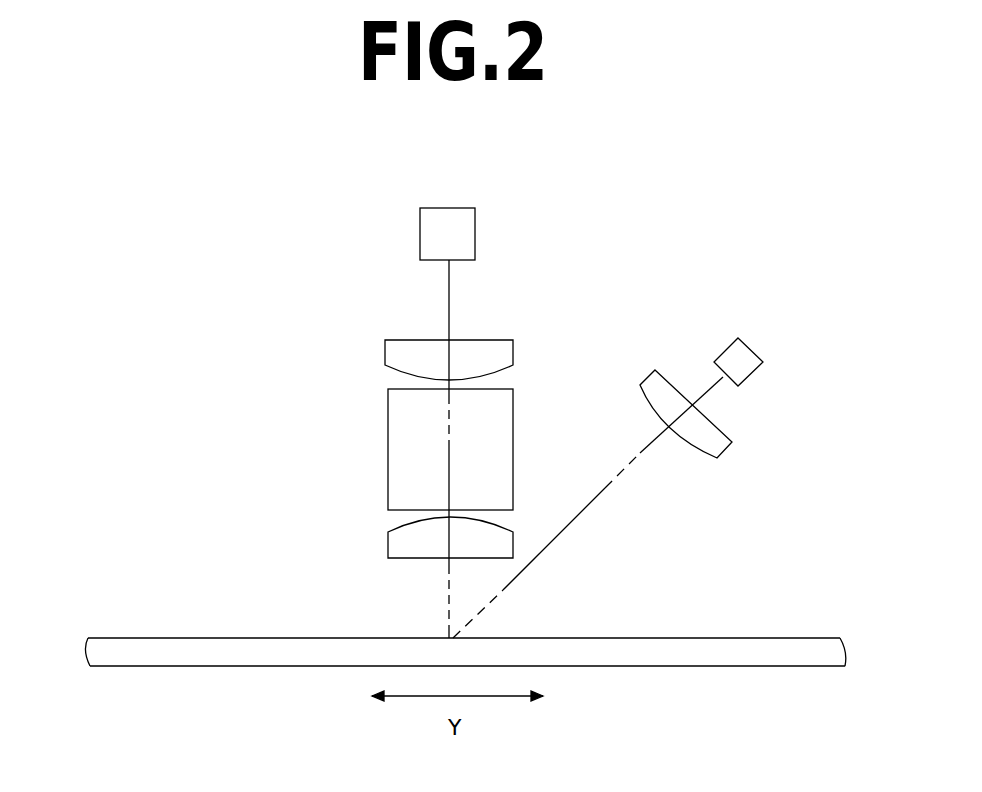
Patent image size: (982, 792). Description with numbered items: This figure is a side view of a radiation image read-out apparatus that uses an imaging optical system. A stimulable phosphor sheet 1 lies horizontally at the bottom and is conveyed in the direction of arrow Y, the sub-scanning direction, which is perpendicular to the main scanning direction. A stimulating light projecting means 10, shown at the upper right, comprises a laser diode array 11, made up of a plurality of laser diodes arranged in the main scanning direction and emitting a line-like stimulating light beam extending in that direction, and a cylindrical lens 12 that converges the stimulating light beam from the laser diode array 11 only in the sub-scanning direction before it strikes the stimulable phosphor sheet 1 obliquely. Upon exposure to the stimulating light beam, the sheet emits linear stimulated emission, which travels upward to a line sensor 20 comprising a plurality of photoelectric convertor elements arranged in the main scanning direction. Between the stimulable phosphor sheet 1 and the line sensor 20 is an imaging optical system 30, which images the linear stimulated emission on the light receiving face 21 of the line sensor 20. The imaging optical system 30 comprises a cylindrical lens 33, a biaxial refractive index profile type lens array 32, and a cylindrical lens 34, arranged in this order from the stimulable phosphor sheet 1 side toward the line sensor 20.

The stimulable phosphor sheet 1 is at (812, 648).
The stimulating light projecting means 10 is at (608, 428).
The laser diode array 11 is at (724, 346).
The cylindrical lens 12 is at (686, 364).
The line sensor 20 is at (459, 243).
The light receiving face 21 is at (469, 264).
The imaging optical system 30 is at (377, 440).
The biaxial refractive index profile type lens array 32 is at (388, 450).
The cylindrical lens 33 is at (407, 537).
The cylindrical lens 34 is at (385, 355).